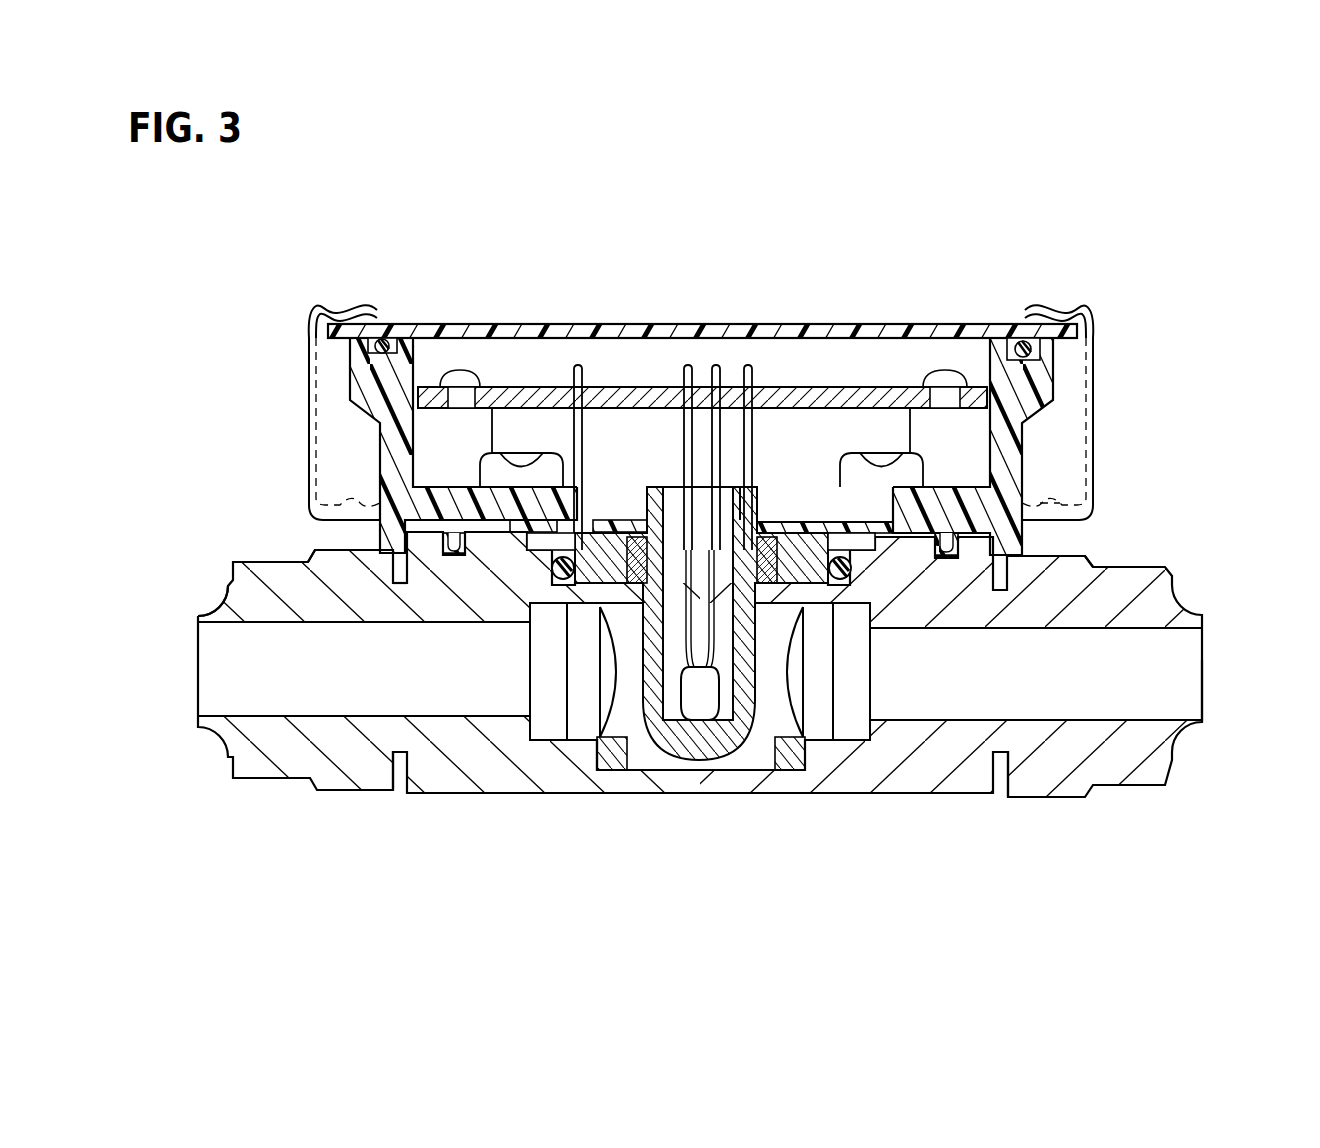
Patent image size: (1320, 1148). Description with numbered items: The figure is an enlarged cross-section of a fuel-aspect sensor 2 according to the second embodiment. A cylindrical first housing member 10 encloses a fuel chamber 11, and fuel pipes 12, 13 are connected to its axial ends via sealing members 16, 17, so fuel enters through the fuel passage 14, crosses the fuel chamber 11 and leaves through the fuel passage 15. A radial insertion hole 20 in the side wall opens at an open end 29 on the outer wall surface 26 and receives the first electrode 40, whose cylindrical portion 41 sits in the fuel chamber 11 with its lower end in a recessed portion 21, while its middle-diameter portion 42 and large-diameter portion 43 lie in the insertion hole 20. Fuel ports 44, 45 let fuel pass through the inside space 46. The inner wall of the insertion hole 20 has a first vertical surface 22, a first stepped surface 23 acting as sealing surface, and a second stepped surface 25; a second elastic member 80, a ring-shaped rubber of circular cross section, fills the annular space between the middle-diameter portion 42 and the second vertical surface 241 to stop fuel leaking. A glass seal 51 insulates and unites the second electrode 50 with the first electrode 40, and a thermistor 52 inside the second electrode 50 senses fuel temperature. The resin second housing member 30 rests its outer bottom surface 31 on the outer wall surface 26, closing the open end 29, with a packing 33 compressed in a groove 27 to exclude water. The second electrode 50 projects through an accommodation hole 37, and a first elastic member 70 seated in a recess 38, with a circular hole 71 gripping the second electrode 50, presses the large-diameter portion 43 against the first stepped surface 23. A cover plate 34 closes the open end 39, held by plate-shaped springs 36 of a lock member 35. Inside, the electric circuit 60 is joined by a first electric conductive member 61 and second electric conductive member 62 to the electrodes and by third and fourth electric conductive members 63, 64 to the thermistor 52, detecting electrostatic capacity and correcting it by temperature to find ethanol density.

The fuel-aspect sensor 2 is at (313, 220).
The first housing member 10 is at (468, 765).
The fuel chamber 11 is at (575, 762).
The fuel pipe 12 is at (300, 750).
The fuel pipe 13 is at (1137, 730).
The fuel passage 14 is at (262, 680).
The fuel passage 15 is at (1065, 790).
The sealing member 16 is at (400, 770).
The sealing member 17 is at (1000, 790).
The insertion hole 20 is at (960, 633).
The recessed portion 21 is at (706, 690).
The first vertical surface 22 is at (430, 499).
The first stepped surface 23 is at (490, 472).
The second stepped surface 25 is at (290, 613).
The outer wall surface 26 is at (1088, 517).
The groove 27 is at (310, 562).
The open end 29 is at (960, 483).
The second housing member 30 is at (1040, 373).
The outer bottom surface 31 is at (950, 513).
The packing 33 is at (440, 541).
The cover plate 34 is at (424, 324).
The lock member 35 is at (330, 372).
The plate-shaped spring 36 is at (322, 320).
The accommodation hole 37 is at (757, 488).
The recess 38 is at (828, 492).
The open end 39 is at (995, 338).
The first electrode 40 is at (613, 662).
The cylindrical portion 41 is at (773, 660).
The middle-diameter portion 42 is at (880, 632).
The large-diameter portion 43 is at (1090, 560).
The fuel port 44 is at (583, 745).
The fuel port 45 is at (843, 745).
The inside space 46 is at (647, 758).
The second electrode 50 is at (697, 742).
The glass seal 51 is at (604, 524).
The thermistor 52 is at (790, 758).
The electric circuit 60 is at (495, 387).
The first electric conductive member 61 is at (577, 365).
The second electric conductive member 62 is at (748, 365).
The third electric conductive member 63 is at (688, 365).
The fourth electric conductive member 64 is at (716, 365).
The first elastic member 70 is at (650, 500).
The circular hole 71 is at (660, 490).
The second elastic member 80 is at (852, 576).
The second vertical surface 241 is at (393, 584).